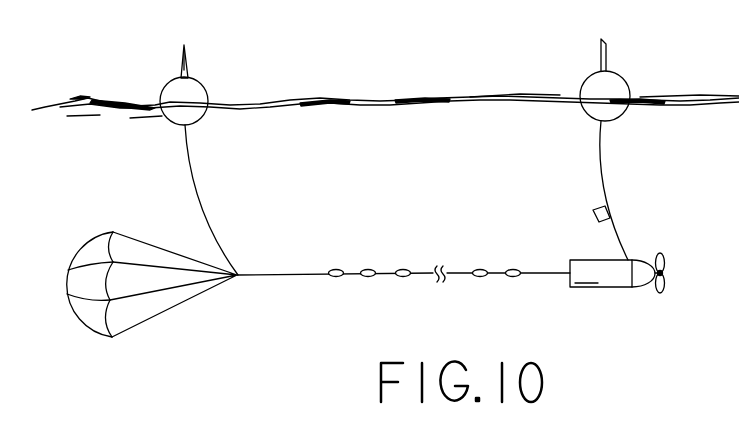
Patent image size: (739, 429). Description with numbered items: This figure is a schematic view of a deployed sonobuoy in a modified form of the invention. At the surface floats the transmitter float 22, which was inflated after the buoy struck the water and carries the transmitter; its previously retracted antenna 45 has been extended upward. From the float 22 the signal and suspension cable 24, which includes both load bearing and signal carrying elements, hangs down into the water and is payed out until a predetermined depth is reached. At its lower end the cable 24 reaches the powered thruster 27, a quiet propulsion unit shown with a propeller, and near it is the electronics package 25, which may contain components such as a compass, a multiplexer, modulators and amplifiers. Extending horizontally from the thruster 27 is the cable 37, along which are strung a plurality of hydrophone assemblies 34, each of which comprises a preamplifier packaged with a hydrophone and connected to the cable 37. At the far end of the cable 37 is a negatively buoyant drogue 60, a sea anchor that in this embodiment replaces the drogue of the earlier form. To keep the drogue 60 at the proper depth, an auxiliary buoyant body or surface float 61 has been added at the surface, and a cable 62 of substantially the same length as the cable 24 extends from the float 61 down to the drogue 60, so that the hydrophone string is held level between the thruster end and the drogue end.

The transmitter float 22 is at (635, 62).
The signal and suspension cable 24 is at (605, 163).
The electronics package 25 is at (600, 233).
The powered thruster 27 is at (602, 290).
The hydrophone assemblies 34 is at (470, 267).
The cable 37 is at (272, 266).
The antenna 45 is at (611, 57).
The negatively buoyant drogue 60 is at (104, 227).
The auxiliary buoyant body or surface float 61 is at (192, 70).
The cable 62 is at (194, 169).